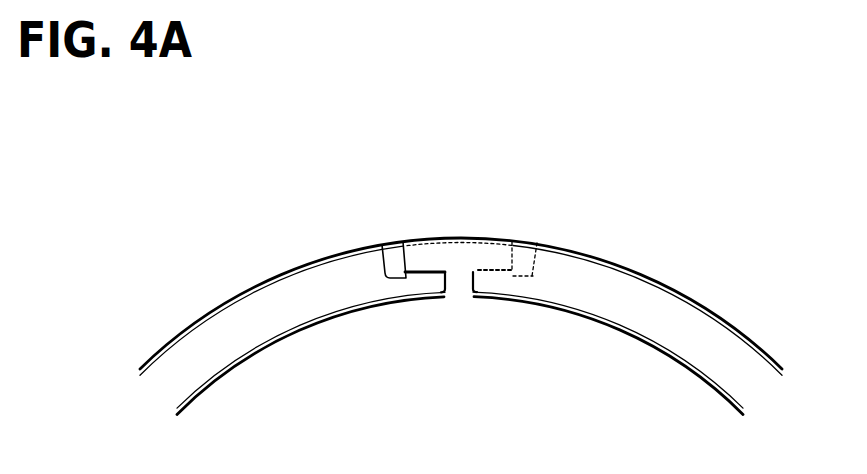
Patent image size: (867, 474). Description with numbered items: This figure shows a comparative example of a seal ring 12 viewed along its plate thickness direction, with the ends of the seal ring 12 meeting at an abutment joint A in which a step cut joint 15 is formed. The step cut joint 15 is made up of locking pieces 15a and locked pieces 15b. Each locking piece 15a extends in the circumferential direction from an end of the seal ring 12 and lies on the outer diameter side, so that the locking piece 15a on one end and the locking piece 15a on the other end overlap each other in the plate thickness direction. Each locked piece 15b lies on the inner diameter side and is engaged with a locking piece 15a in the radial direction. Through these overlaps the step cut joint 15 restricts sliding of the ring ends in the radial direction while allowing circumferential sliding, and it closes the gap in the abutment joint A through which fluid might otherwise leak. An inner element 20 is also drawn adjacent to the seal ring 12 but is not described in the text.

The seal ring 12 is at (732, 268).
The inner ring 20 is at (723, 342).
The step cut joint 15 is at (461, 208).
The locking piece 15a is at (432, 257).
The locked piece 15b is at (418, 283).
The abutment joint A is at (465, 207).